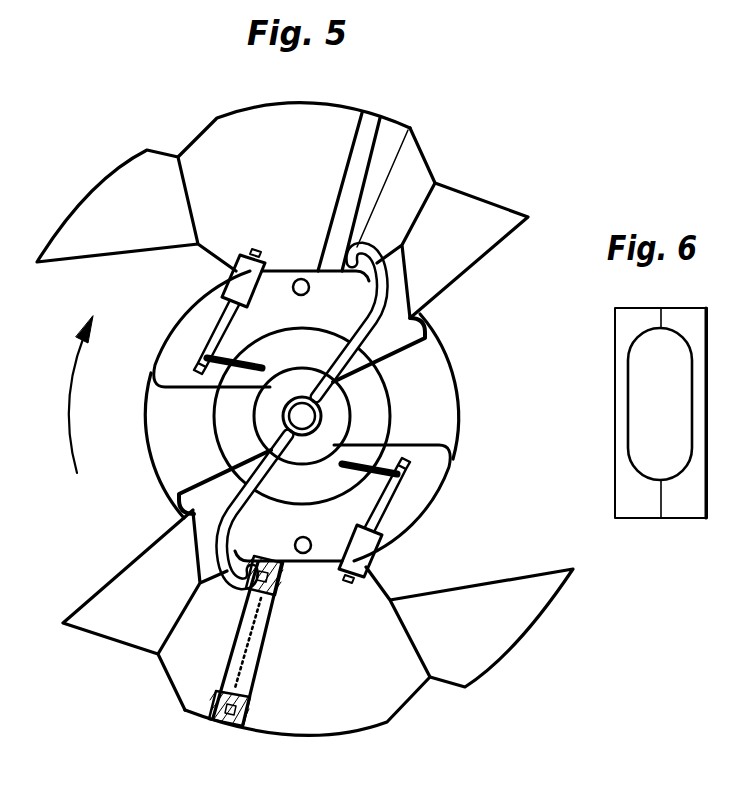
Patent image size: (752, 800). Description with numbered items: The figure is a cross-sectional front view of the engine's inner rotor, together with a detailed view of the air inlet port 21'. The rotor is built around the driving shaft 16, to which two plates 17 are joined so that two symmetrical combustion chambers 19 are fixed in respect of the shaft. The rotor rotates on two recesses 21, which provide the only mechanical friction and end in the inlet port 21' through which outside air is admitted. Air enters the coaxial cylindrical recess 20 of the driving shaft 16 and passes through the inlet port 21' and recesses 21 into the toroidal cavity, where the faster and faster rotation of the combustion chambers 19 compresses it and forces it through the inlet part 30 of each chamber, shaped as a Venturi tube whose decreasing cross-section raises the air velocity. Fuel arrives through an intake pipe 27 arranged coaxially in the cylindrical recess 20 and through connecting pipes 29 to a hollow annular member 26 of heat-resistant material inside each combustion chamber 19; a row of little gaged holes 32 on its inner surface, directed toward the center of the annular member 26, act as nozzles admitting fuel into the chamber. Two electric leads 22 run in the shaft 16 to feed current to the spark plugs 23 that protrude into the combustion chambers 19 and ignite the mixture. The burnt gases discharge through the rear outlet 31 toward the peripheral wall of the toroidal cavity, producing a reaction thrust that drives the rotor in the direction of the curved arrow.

In FIG. 5, the driving shaft 16 is at (218, 407).
In FIG. 5, the plates 17 is at (192, 322).
In FIG. 5, the combustion chambers 19 is at (203, 157).
In FIG. 5, the cylindrical recess 20 is at (333, 397).
In FIG. 5, the recesses 21 is at (306, 416).
In FIG. 6, the inlet port 21' is at (661, 439).
In FIG. 5, the electric leads 22 is at (262, 358).
In FIG. 5, the spark plugs 23 is at (232, 288).
In FIG. 5, the hollow annular member 26 is at (357, 178).
In FIG. 5, the intake pipe 27 is at (308, 416).
In FIG. 5, the connecting pipes 29 is at (367, 312).
In FIG. 5, the inlet part 30 is at (473, 207).
In FIG. 5, the rear outlet 31 is at (100, 197).
In FIG. 5, the gaged holes 32 is at (250, 627).